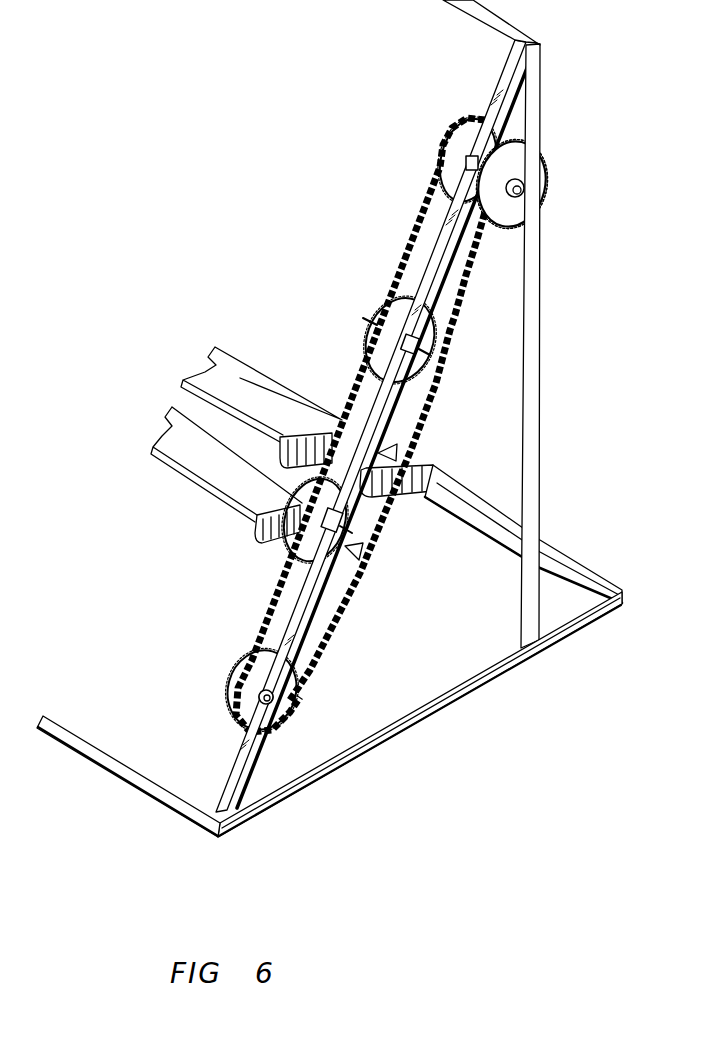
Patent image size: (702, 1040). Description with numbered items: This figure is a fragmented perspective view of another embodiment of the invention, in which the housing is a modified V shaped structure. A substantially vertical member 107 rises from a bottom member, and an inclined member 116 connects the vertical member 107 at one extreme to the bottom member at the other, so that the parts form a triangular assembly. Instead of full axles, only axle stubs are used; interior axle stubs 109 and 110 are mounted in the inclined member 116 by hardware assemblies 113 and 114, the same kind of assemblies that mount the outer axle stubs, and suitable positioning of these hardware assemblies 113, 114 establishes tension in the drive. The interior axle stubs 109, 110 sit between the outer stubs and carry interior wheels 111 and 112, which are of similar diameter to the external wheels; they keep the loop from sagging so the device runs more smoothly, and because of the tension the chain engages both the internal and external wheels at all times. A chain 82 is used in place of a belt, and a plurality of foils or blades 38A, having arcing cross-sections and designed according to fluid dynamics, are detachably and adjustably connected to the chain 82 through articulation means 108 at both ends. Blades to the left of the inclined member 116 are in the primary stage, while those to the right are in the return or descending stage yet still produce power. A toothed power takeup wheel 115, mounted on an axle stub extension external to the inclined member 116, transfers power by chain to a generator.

The foils (blades) 38A is at (240, 511).
The chain 82 is at (323, 660).
The vertical member 107 is at (541, 320).
The articulation means 108 is at (287, 543).
The interior axle stub 109 is at (413, 340).
The interior axle stub 110 is at (345, 543).
The interior wheel 111 is at (427, 352).
The interior wheel 112 is at (348, 522).
The hardware assembly 113 is at (415, 372).
The hardware assembly 114 is at (332, 567).
The power takeup wheel 115 is at (540, 176).
The inclined member 116 is at (250, 762).